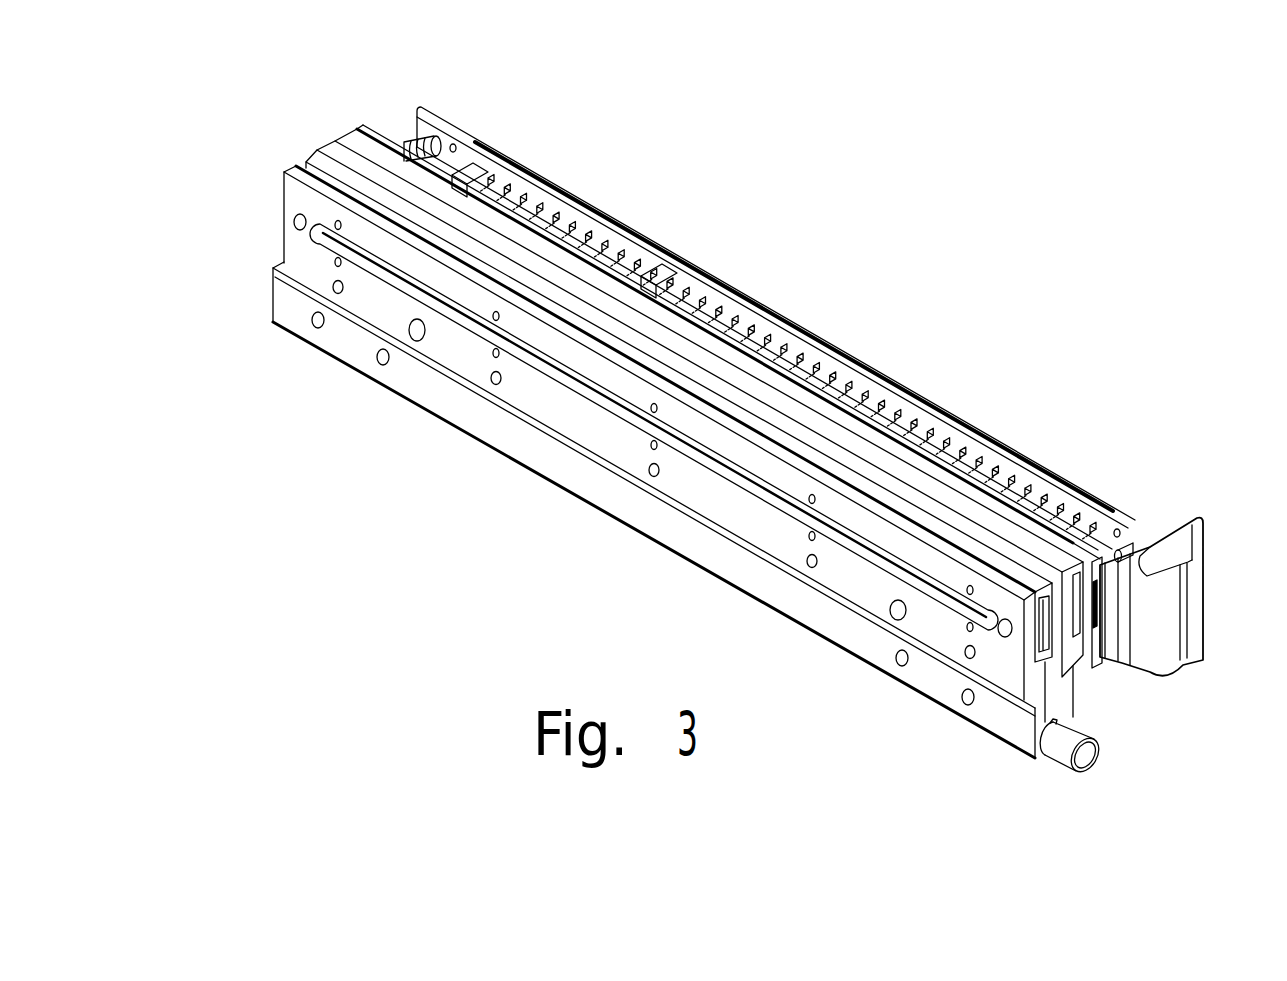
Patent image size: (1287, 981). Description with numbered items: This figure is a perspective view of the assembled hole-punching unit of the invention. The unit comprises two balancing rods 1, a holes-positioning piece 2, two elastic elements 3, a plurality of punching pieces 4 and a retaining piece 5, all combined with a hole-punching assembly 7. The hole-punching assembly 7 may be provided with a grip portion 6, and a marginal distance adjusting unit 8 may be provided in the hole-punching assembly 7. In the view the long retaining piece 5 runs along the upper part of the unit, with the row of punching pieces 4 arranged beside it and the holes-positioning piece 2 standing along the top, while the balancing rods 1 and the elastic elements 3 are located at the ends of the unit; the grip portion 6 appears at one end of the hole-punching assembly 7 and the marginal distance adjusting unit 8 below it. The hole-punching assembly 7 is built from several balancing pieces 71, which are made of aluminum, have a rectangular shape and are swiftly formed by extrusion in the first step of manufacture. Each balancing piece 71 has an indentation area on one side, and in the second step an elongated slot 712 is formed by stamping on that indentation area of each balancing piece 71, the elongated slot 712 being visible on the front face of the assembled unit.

The balancing rod 1 is at (423, 140).
The holes-positioning piece 2 is at (463, 153).
The elastic element 3 is at (407, 147).
The punching piece 4 is at (493, 180).
The retaining piece 5 is at (597, 207).
The grip portion 6 is at (1157, 625).
The hole-punching assembly 7 is at (352, 20).
The balancing piece 71 is at (383, 143).
The elongated slot 712 is at (343, 251).
The marginal distance adjusting unit 8 is at (1100, 746).